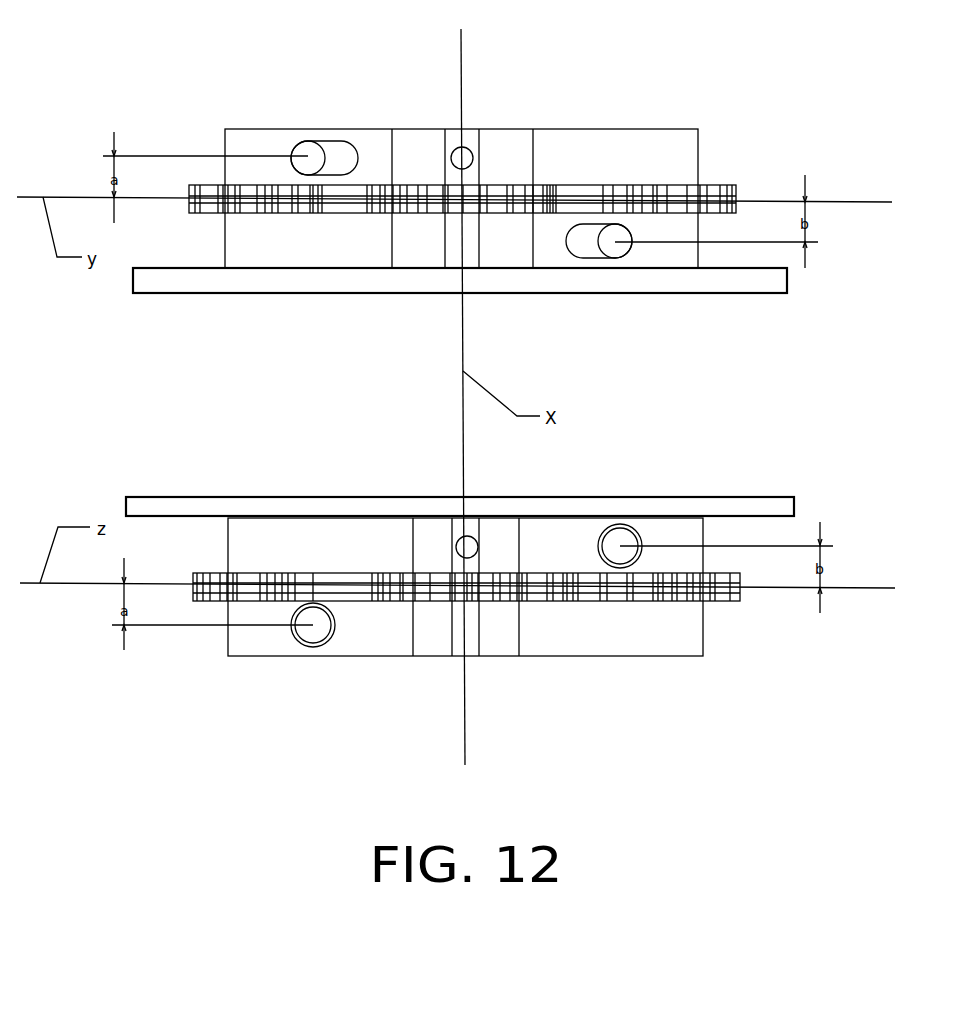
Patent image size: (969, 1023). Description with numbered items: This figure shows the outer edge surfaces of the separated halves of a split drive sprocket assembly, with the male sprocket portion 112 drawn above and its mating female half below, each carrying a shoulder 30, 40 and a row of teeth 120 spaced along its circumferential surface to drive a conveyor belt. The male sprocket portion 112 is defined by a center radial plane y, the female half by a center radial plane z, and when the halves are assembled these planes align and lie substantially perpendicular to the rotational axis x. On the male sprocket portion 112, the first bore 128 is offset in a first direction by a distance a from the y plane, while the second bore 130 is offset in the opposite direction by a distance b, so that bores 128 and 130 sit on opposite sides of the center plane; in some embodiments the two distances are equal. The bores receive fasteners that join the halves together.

The male sprocket portion 112 is at (461, 244).
The teeth 120 is at (462, 148).
The first bore 128 is at (354, 100).
The second bore 130 is at (638, 285).
The shoulder 40 is at (173, 295).
The shoulder 30 is at (348, 492).